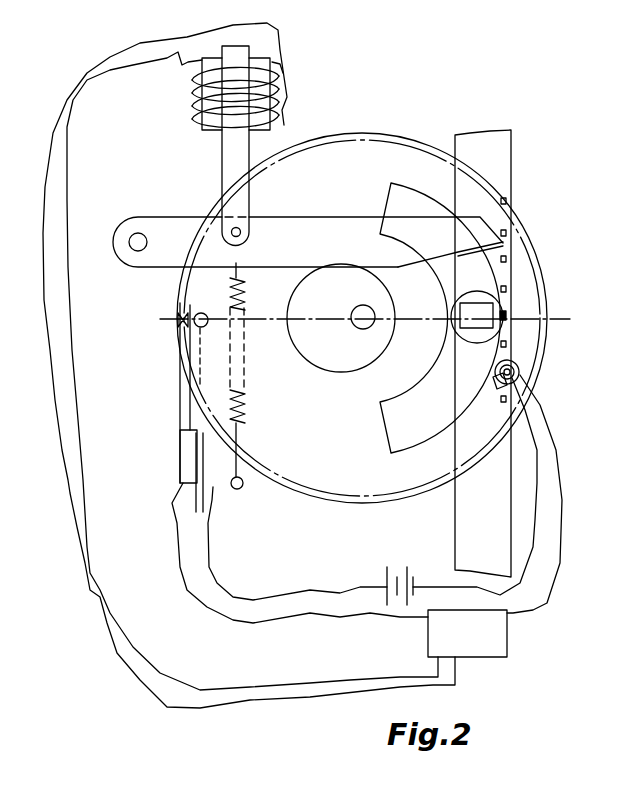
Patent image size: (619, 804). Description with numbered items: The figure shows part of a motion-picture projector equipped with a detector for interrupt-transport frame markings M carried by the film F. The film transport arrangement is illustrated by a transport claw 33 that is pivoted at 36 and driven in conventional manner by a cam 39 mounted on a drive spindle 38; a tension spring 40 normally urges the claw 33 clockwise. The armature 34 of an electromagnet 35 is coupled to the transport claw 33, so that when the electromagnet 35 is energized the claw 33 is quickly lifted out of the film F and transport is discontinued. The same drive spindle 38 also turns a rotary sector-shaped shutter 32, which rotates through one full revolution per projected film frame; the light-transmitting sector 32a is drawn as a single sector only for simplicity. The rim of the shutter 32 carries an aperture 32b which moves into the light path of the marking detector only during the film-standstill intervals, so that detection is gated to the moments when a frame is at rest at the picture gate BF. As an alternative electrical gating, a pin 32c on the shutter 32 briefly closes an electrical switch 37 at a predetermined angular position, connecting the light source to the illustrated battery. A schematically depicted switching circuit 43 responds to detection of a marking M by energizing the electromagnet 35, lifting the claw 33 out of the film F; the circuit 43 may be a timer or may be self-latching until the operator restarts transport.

The rotary sector-shaped shutter 32 is at (385, 165).
The contact sector 32a is at (412, 200).
The aperture 32b is at (520, 378).
The pin 32c is at (209, 311).
The transport claw 33 is at (508, 237).
The armature 34 is at (243, 143).
The electromagnet 35 is at (277, 66).
The pivot 36 is at (140, 232).
The electrical switch 37 is at (185, 400).
The drive spindle 38 is at (370, 322).
The cam 39 is at (323, 357).
The tension spring 40 is at (232, 388).
The switching circuit 43 is at (467, 633).
The film F is at (477, 150).
The picture gate BF is at (490, 312).
The interrupt-transport frame marking M is at (515, 368).